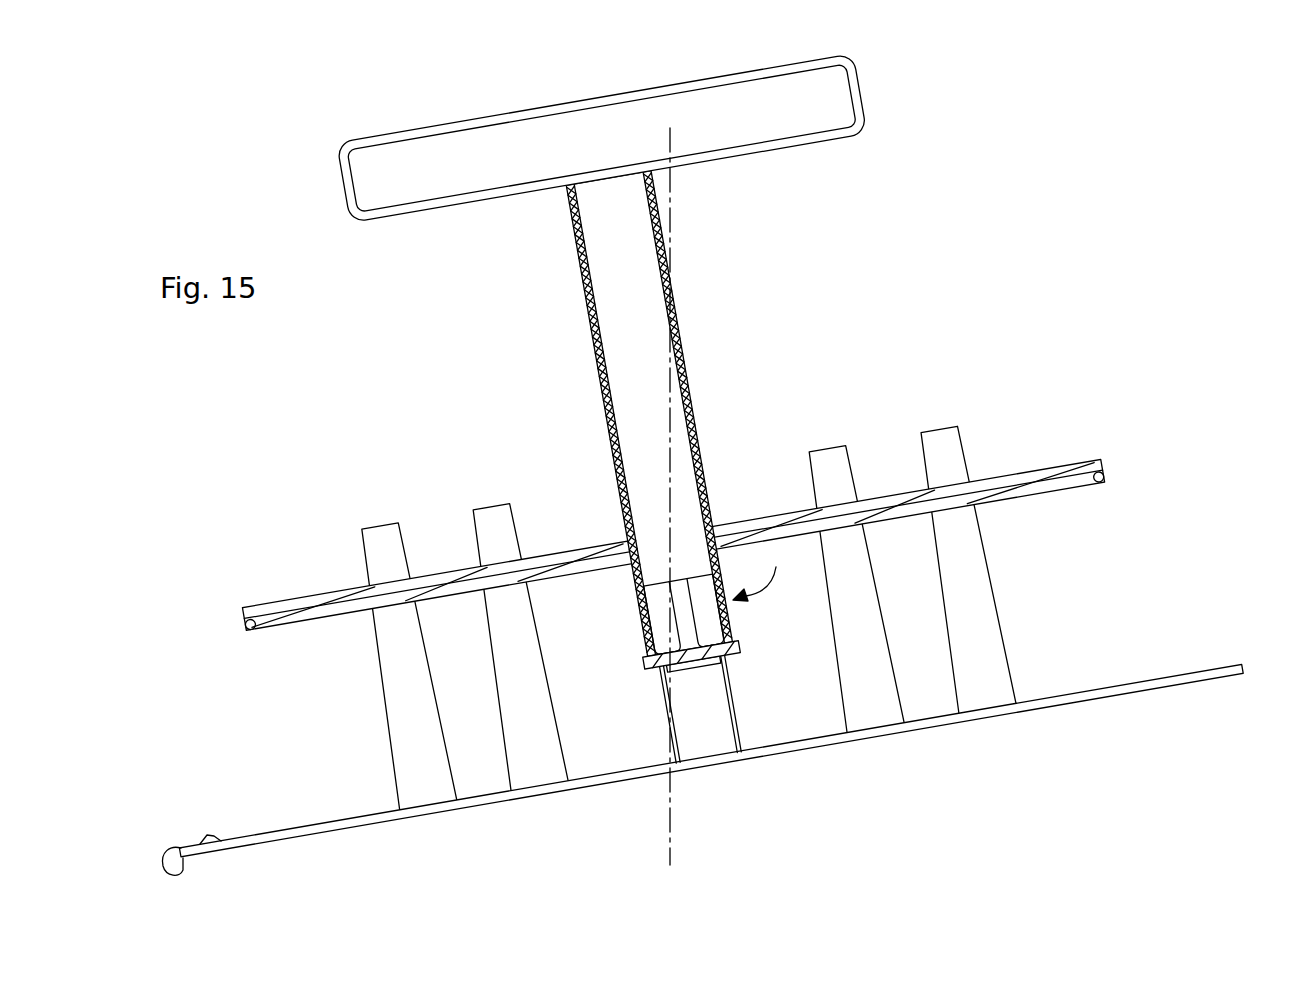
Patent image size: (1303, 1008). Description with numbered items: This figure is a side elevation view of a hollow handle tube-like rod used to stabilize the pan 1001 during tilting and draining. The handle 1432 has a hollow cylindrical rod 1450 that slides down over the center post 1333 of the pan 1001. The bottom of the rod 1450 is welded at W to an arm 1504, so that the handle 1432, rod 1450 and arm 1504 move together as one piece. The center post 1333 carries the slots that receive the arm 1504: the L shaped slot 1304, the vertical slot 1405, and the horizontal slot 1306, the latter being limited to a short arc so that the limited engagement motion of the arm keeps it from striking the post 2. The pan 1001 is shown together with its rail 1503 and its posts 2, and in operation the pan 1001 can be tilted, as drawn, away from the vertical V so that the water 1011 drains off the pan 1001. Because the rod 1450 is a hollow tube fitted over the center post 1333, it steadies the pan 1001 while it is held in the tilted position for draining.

The handle 1432 is at (652, 92).
The hollow cylindrical rod 1450 is at (676, 326).
The rail 1503 is at (1038, 467).
The post 2 is at (988, 617).
The pan 1001 is at (1095, 692).
The water 1011 is at (178, 845).
The L shaped slot 1304 is at (769, 573).
The vertical slot 1405 is at (683, 618).
The arm 1504 is at (733, 641).
The horizontal slot 1306 is at (723, 659).
The weld W is at (645, 654).
The center post 1333 is at (745, 738).
The vertical V is at (669, 507).